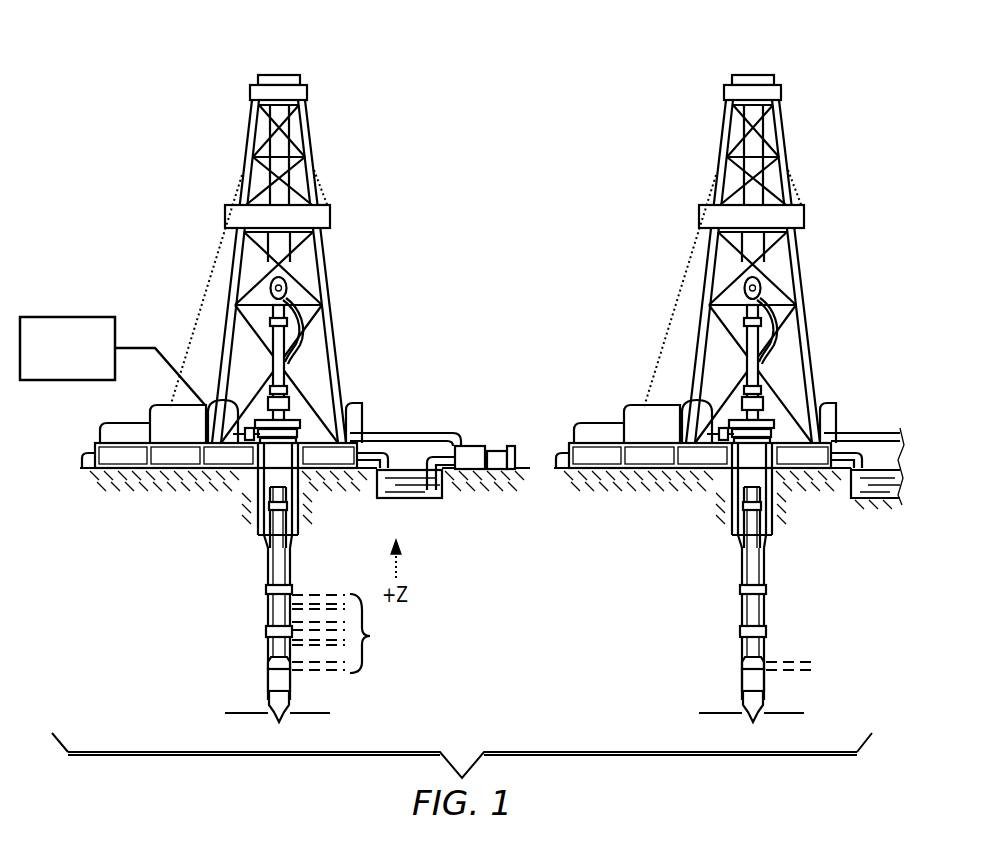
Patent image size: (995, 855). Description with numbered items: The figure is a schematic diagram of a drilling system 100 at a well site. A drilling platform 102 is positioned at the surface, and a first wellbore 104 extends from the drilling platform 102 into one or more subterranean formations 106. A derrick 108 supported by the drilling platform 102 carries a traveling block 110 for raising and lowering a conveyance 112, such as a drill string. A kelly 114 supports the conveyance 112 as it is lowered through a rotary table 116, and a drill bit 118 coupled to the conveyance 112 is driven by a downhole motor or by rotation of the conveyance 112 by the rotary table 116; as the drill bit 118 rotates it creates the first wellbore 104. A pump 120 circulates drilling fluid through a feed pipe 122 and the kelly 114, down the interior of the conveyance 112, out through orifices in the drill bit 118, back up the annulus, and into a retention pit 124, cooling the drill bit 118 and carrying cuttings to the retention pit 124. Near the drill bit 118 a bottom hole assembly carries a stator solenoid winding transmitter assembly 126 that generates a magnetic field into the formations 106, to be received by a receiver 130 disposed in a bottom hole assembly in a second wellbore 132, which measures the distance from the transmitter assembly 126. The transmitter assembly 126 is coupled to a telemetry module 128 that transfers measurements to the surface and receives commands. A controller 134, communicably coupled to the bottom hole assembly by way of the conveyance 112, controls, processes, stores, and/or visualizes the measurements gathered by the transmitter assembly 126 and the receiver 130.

The drilling system 100 is at (628, 28).
The drilling platform 102 is at (95, 450).
The first wellbore 104 is at (291, 580).
The subterranean formations 106 is at (352, 633).
The derrick 108 is at (313, 150).
The traveling block 110 is at (266, 287).
The conveyance 112 is at (279, 562).
The kelly 114 is at (280, 362).
The rotary table 116 is at (300, 425).
The drill bit 118 is at (282, 703).
The pump 120 is at (490, 446).
The feed pipe 122 is at (420, 433).
The retention pit 124 is at (430, 498).
The stator solenoid winding transmitter assembly 126 is at (275, 692).
The telemetry module 128 is at (272, 670).
The receiver 130 is at (748, 690).
The second wellbore 132 is at (764, 594).
The controller 134 is at (112, 361).